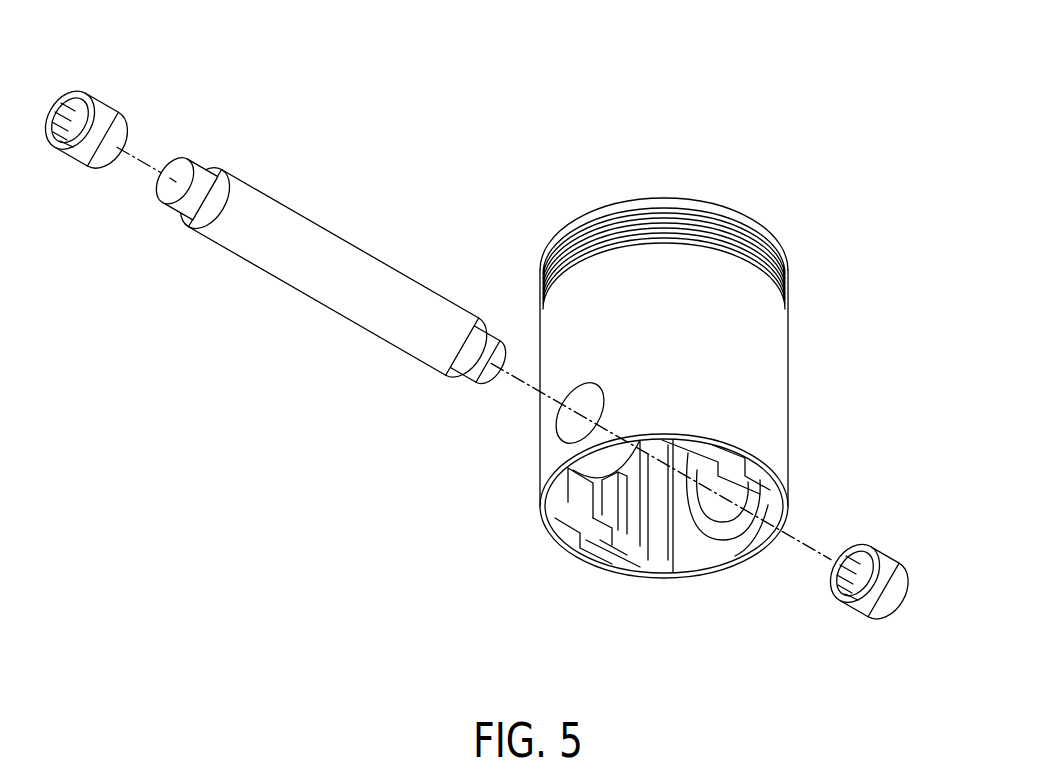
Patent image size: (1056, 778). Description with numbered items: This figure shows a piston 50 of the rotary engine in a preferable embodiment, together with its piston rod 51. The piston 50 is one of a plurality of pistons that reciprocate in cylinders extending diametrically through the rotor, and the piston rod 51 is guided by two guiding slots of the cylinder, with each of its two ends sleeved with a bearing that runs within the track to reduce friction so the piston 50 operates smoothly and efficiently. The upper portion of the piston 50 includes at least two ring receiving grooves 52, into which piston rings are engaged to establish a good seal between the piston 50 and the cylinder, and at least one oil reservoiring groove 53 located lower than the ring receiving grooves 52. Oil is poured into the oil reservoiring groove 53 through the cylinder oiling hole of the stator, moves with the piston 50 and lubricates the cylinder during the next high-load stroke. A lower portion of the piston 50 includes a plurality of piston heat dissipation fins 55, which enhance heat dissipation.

The piston 50 is at (767, 368).
The piston rod 51 is at (340, 257).
The ring receiving groove 52 is at (573, 235).
The oil reservoiring groove 53 is at (777, 243).
The piston heat dissipation fins 55 is at (556, 495).